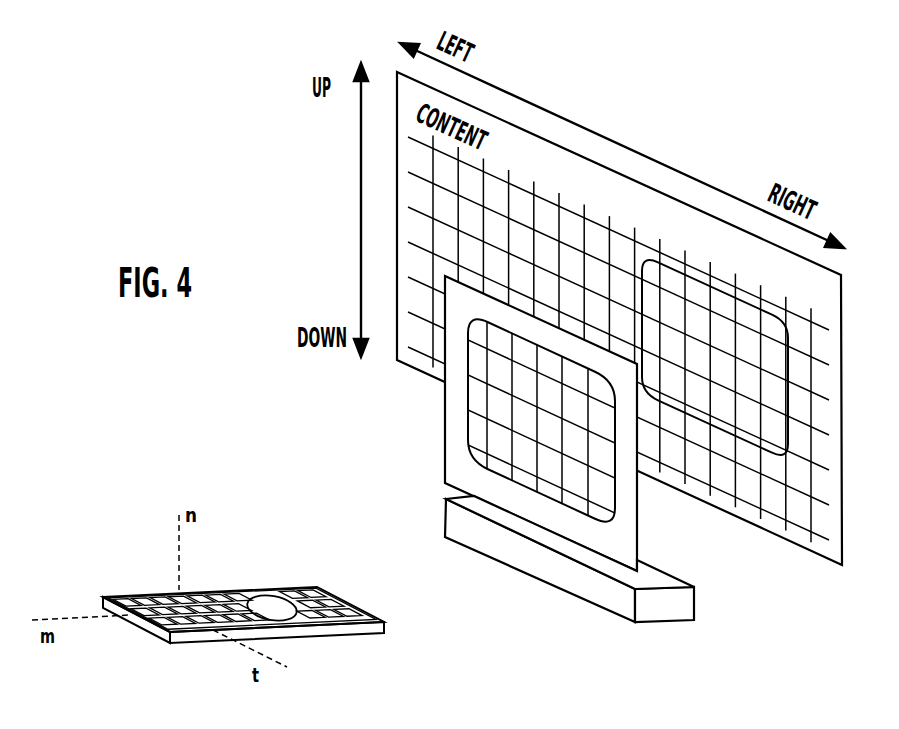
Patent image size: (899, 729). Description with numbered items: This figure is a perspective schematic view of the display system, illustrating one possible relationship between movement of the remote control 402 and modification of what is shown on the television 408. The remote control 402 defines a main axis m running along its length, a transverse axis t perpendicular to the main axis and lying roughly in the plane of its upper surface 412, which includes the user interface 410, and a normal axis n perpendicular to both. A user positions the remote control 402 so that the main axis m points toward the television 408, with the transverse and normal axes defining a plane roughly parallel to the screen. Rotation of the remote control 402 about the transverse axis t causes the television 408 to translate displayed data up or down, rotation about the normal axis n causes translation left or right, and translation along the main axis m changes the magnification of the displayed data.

The remote control 402 is at (449, 628).
The user interface 410 is at (147, 600).
The upper surface 412 is at (243, 598).
The television 408 is at (637, 538).